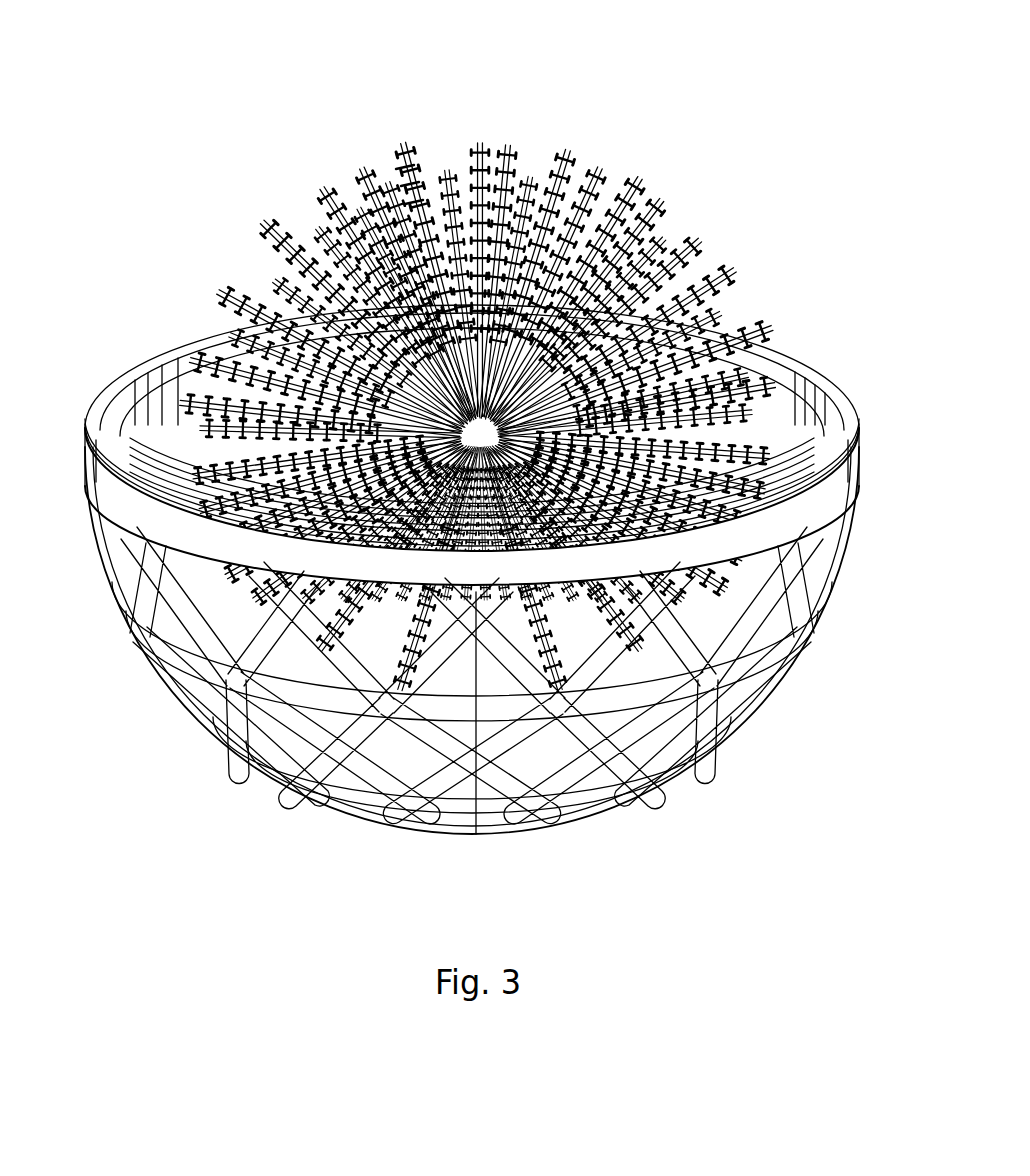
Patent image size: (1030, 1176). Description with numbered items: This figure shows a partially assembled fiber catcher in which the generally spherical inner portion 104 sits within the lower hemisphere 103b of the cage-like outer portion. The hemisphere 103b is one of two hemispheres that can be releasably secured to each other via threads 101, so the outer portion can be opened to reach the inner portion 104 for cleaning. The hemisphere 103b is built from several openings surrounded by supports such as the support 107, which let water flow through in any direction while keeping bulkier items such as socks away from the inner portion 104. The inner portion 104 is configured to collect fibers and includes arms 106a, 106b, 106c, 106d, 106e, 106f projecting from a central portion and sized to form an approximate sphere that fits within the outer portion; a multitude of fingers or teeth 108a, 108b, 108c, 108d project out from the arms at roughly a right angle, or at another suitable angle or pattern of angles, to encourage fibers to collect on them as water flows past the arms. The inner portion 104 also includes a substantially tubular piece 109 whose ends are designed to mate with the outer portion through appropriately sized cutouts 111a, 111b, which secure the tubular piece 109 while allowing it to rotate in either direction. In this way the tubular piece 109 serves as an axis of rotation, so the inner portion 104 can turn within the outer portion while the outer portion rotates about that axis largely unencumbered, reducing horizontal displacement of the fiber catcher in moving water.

The threads 101 is at (855, 412).
The hemisphere 103b is at (145, 699).
The inner portion 104 is at (218, 288).
The arm 106a is at (481, 142).
The arm 106b is at (507, 147).
The arm 106c is at (573, 148).
The arm 106d is at (637, 180).
The arm 106e is at (650, 207).
The arm 106f is at (700, 242).
The support 107 is at (253, 712).
The tooth 108a is at (405, 145).
The tooth 108b is at (405, 167).
The tooth 108c is at (409, 184).
The tooth 108d is at (413, 202).
The tubular piece 109 is at (747, 378).
The cutout 111a is at (753, 382).
The cutout 111b is at (223, 473).